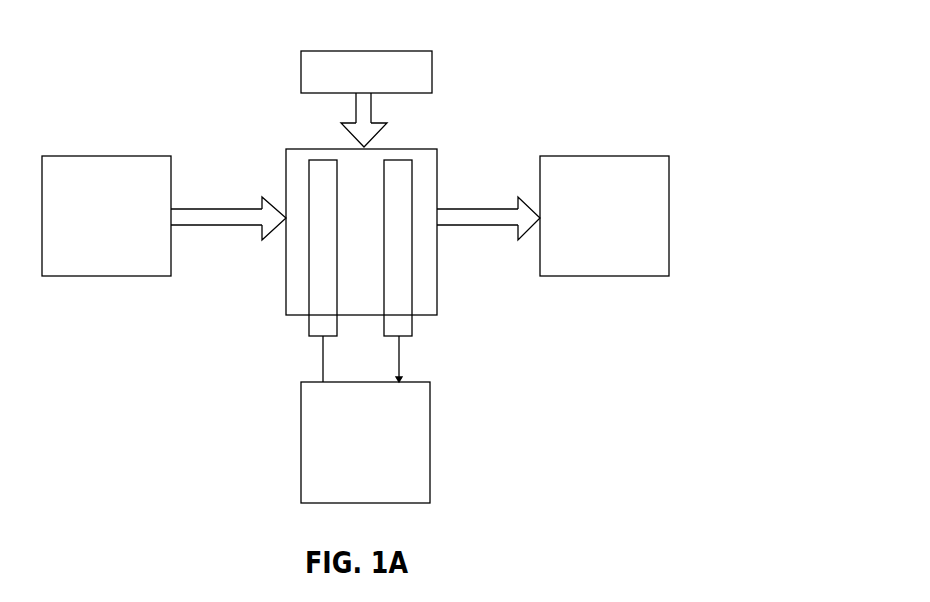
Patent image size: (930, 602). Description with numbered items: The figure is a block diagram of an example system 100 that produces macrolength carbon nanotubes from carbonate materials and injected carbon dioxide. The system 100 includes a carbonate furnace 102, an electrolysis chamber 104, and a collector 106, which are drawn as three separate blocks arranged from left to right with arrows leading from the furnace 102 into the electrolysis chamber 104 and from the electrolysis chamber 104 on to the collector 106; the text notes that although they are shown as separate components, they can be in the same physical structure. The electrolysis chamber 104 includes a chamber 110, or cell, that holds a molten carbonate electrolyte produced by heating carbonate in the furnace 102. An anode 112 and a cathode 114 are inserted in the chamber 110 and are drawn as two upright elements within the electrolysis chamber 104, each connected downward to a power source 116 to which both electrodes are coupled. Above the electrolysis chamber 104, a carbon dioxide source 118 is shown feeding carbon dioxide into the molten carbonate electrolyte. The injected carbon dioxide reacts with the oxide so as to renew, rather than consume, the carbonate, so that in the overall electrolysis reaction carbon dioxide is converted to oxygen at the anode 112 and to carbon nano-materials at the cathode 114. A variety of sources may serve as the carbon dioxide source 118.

The system 100 is at (198, 98).
The carbonate furnace 102 is at (97, 275).
The electrolysis chamber 104 is at (287, 258).
The collector 106 is at (623, 276).
The chamber 110 is at (363, 239).
The anode 112 is at (319, 297).
The cathode 114 is at (400, 320).
The power source 116 is at (298, 447).
The CO2 source 118 is at (432, 83).